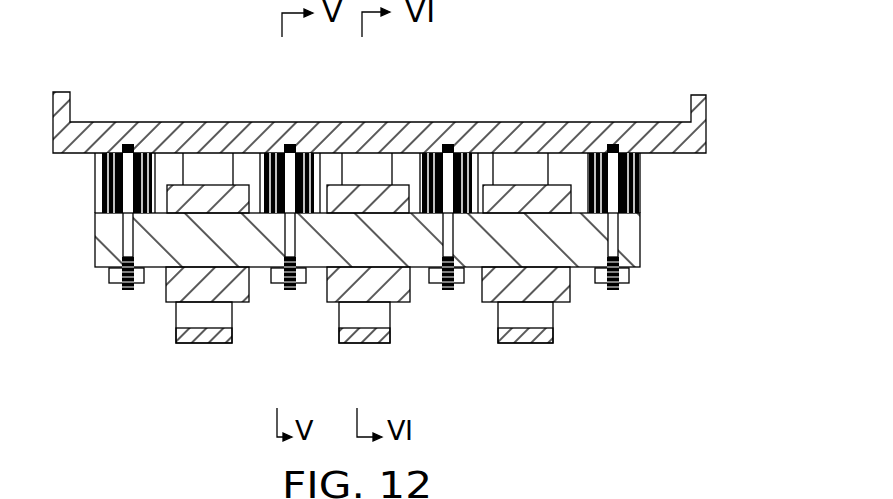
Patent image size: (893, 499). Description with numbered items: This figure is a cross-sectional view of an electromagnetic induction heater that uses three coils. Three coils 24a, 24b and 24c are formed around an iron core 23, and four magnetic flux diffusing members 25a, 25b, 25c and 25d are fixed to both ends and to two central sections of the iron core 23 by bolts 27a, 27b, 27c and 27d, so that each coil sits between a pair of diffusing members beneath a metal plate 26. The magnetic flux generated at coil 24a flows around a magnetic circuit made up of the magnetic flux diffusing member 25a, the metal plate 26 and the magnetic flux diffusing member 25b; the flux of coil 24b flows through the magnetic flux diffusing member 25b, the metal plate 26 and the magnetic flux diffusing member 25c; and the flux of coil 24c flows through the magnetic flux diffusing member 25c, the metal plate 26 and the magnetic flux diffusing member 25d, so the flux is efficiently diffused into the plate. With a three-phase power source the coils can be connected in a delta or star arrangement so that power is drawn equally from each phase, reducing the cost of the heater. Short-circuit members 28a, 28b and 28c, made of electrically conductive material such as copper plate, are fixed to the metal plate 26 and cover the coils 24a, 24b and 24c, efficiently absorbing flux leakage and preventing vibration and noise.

The iron core 23 is at (640, 245).
The metal plate 26 is at (706, 139).
The coil 24a is at (207, 188).
The coil 24b is at (377, 197).
The coil 24c is at (543, 193).
The magnetic flux diffusing member 25a is at (103, 150).
The magnetic flux diffusing member 25b is at (303, 148).
The magnetic flux diffusing member 25c is at (463, 160).
The magnetic flux diffusing member 25d is at (630, 150).
The bolt 27a is at (128, 292).
The bolt 27b is at (290, 292).
The bolt 27c is at (448, 292).
The bolt 27d is at (613, 292).
The short-circuit member 28a is at (205, 345).
The short-circuit member 28b is at (363, 345).
The short-circuit member 28c is at (524, 345).